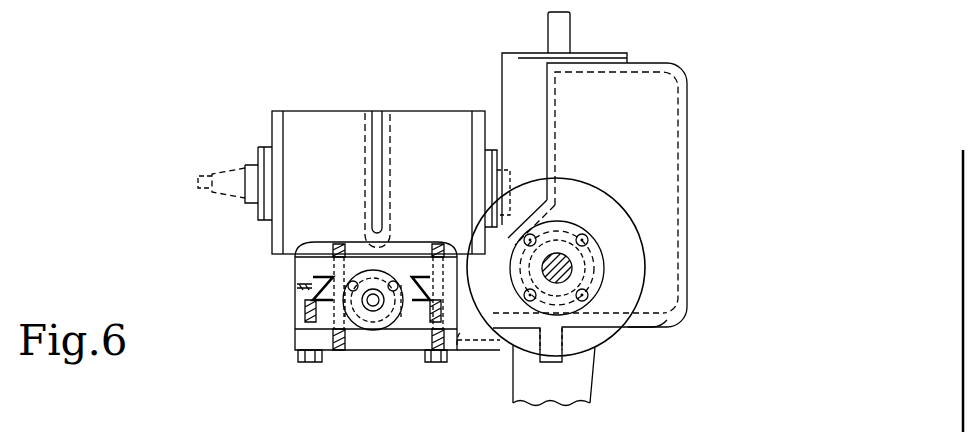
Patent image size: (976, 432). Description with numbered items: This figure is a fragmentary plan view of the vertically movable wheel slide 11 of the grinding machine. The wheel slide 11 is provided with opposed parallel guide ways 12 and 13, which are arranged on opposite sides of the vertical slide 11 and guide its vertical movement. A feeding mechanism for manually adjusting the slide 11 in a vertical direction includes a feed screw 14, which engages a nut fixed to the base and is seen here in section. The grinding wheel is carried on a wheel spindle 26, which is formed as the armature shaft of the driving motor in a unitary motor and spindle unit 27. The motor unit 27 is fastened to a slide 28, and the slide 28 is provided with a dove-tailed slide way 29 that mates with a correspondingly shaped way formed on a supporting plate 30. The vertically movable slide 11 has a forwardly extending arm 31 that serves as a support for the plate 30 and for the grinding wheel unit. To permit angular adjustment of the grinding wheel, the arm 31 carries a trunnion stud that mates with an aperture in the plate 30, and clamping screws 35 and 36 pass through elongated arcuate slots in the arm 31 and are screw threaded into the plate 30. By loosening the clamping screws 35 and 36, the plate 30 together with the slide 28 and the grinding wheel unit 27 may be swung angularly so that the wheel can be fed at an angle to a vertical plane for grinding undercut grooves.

The wheel slide 11 is at (646, 66).
The guide way 12 is at (552, 22).
The guide way 13 is at (596, 373).
The feed screw 14 is at (562, 258).
The wheel spindle 26 is at (231, 178).
The unitary motor and spindle unit 27 is at (323, 118).
The slide 28 is at (300, 268).
The dove-tailed slide way 29 is at (308, 303).
The supporting plate 30 is at (298, 302).
The forwardly extending arm 31 is at (455, 352).
The clamping screw 35 is at (306, 363).
The clamping screw 36 is at (430, 363).